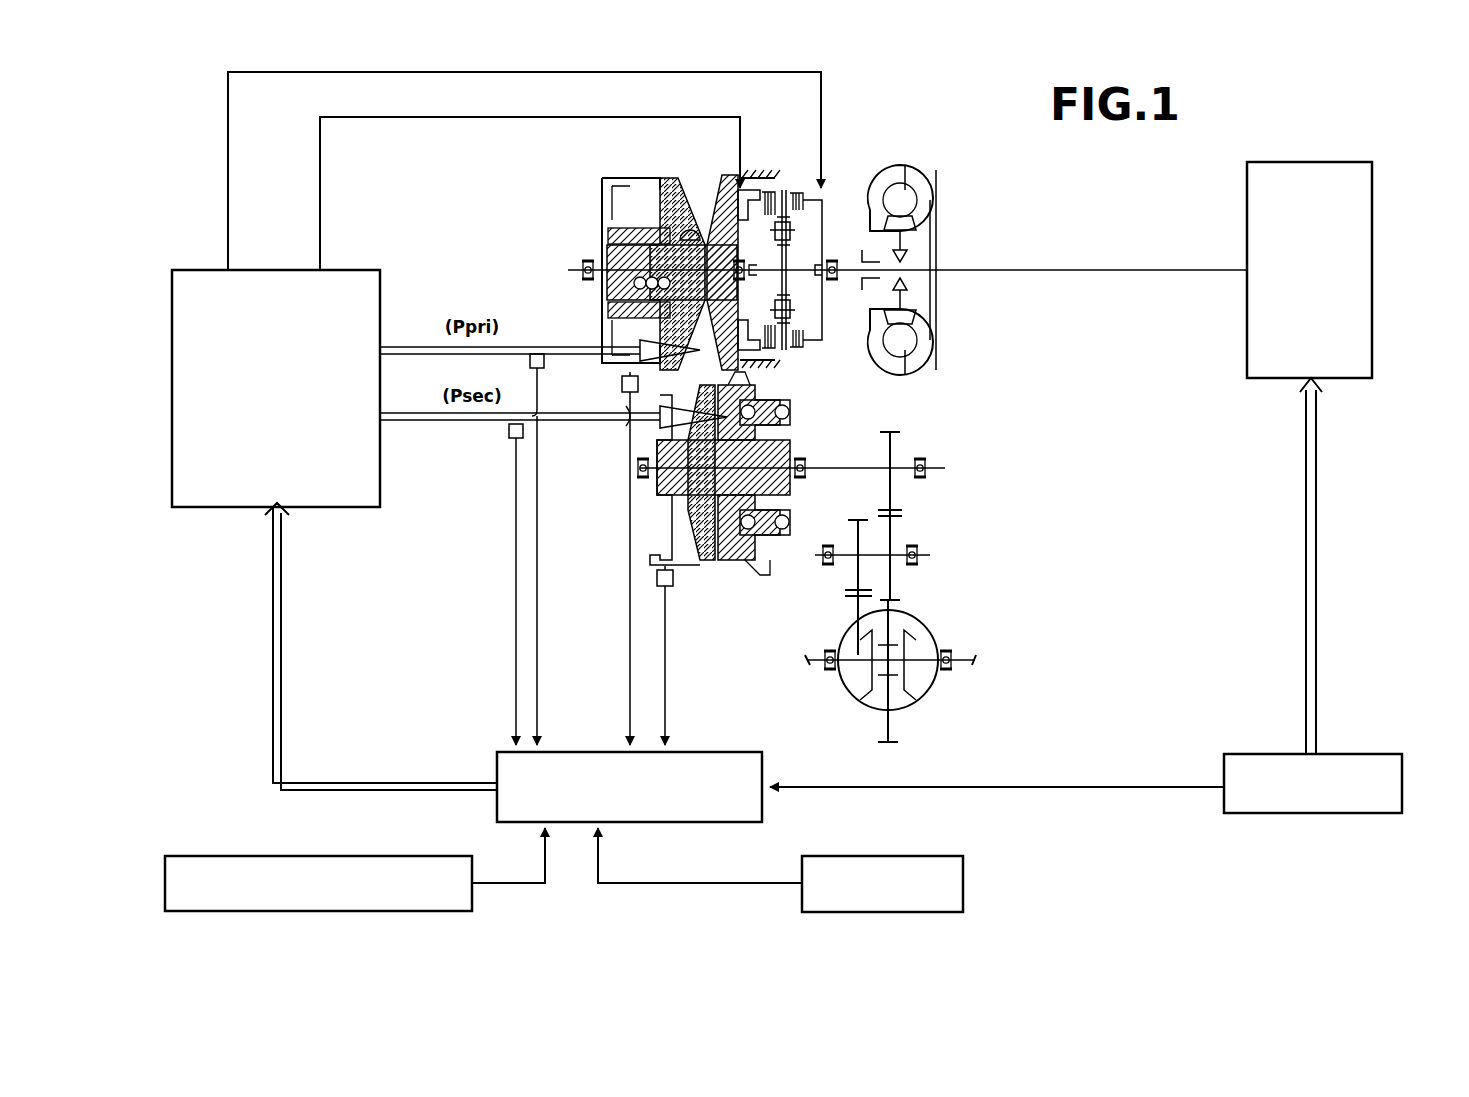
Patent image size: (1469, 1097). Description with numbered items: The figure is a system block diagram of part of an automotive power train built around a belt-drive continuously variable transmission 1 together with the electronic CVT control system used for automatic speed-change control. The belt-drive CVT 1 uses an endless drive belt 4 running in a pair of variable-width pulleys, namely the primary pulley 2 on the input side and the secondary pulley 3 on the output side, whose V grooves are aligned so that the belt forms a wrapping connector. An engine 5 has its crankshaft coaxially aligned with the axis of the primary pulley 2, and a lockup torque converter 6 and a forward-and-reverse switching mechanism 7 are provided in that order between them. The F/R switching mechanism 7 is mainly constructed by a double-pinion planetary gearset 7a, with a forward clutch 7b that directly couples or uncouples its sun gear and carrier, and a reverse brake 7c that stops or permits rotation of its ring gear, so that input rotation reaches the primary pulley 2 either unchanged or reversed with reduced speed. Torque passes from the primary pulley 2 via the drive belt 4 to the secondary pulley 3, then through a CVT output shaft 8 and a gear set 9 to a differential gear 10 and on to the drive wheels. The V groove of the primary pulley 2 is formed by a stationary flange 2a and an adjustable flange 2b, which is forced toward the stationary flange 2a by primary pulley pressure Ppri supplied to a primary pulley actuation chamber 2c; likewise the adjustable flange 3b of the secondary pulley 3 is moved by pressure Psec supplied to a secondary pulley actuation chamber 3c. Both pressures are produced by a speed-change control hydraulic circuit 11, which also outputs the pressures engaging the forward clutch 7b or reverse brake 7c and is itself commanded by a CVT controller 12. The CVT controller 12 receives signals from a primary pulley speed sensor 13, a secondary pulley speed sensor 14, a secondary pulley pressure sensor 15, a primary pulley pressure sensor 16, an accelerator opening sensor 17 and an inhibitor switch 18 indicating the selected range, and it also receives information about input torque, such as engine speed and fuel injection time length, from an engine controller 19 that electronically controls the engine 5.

The belt-drive continuously variable transmission 1 is at (632, 165).
The primary pulley 2 is at (707, 178).
The stationary flange 2a is at (727, 176).
The adjustable flange 2b is at (668, 178).
The primary pulley actuation chamber 2c is at (618, 205).
The secondary pulley 3 is at (748, 566).
The adjustable flange 3b is at (720, 565).
The secondary pulley actuation chamber 3c is at (728, 545).
The drive belt 4 is at (692, 228).
The engine 5 is at (1331, 162).
The lockup torque converter 6 is at (908, 158).
The forward-and-reverse switching mechanism 7 is at (785, 223).
The double-pinion planetary gearset 7a is at (796, 190).
The forward clutch 7b is at (800, 193).
The reverse brake 7c is at (781, 190).
The CVT output shaft 8 is at (842, 468).
The gear set 9 is at (860, 532).
The differential gear 10 is at (940, 628).
The speed-change control hydraulic circuit 11 is at (352, 268).
The CVT controller 12 is at (495, 770).
The primary pulley speed sensor 13 is at (620, 384).
The secondary pulley speed sensor 14 is at (678, 580).
The secondary pulley pressure sensor 15 is at (509, 431).
The primary pulley pressure sensor 16 is at (530, 361).
The accelerator opening sensor 17 is at (392, 856).
The inhibitor switch 18 is at (855, 856).
The engine controller 19 is at (1343, 754).